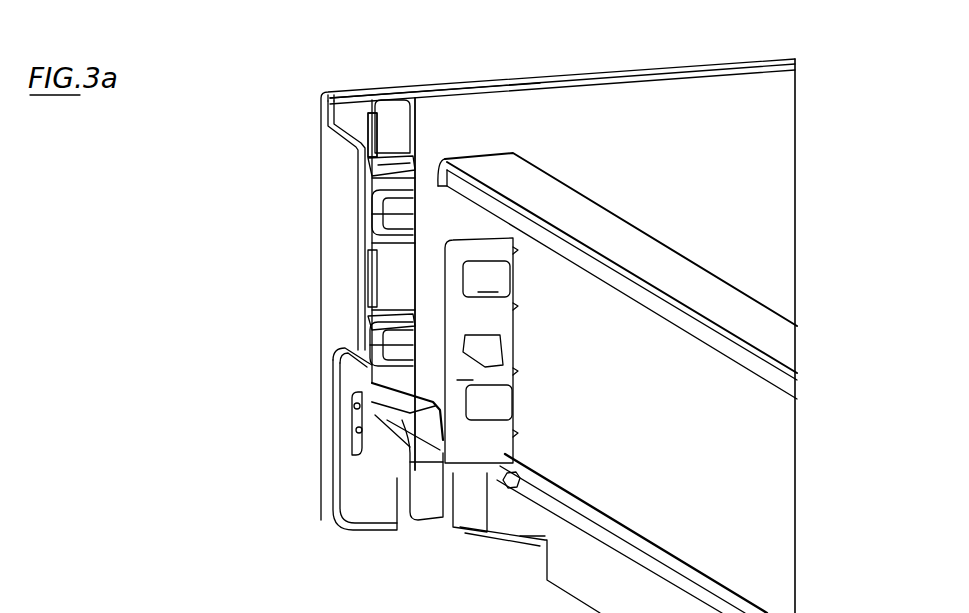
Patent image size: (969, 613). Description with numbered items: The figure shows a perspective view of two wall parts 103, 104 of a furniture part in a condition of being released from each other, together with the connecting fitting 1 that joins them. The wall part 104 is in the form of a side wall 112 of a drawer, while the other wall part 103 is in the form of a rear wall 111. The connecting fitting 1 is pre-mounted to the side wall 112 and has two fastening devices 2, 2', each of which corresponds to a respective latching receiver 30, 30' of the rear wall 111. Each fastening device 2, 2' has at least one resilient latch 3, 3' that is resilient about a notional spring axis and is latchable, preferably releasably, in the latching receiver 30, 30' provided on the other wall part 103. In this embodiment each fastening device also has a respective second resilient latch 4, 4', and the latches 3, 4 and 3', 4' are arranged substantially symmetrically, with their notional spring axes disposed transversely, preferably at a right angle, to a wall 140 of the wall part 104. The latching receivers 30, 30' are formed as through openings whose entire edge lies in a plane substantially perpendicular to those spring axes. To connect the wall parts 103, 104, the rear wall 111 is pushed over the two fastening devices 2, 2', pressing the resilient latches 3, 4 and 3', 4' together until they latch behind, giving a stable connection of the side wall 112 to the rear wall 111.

The connecting fitting 1 is at (415, 442).
The fastening device 2 is at (329, 212).
The resilient latch 3 is at (338, 175).
The second resilient latch 4 is at (325, 186).
The fastening device 2' is at (316, 344).
The resilient latch 3' is at (338, 327).
The second resilient latch 4' is at (328, 439).
The latching receiver 30 is at (481, 350).
The latching receiver 30' is at (526, 513).
The wall part 103 is at (675, 396).
The wall part 104 is at (712, 110).
The rear wall 111 is at (765, 442).
The side wall 112 is at (566, 114).
The wall 140 is at (640, 156).